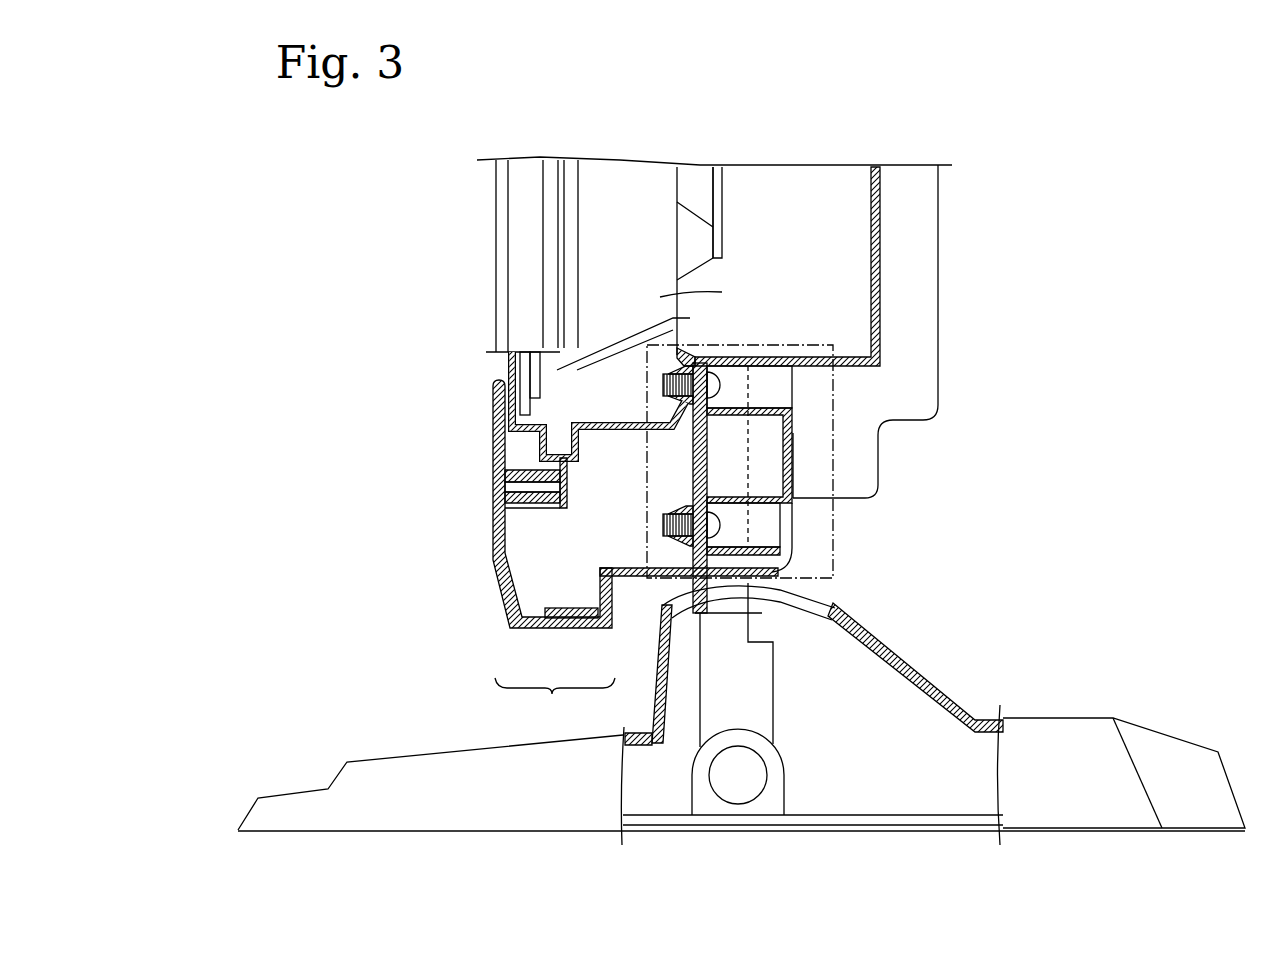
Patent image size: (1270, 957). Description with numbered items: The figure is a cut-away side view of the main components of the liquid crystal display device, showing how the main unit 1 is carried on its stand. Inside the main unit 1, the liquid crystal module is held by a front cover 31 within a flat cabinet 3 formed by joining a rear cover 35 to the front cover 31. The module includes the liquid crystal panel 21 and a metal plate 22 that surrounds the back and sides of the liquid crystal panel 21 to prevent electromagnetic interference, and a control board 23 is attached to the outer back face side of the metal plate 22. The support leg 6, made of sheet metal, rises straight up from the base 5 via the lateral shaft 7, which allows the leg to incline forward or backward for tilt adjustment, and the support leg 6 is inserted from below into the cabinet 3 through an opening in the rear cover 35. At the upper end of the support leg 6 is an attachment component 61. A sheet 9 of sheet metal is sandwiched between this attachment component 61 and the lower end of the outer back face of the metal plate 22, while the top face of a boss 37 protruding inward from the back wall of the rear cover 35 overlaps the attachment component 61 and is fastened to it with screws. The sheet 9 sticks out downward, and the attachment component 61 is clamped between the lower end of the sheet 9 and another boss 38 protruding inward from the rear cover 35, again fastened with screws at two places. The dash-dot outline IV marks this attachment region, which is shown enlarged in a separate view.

The main unit 1 is at (968, 212).
The liquid crystal panel 21 is at (508, 230).
The metal plate 22 is at (690, 335).
The control board 23 is at (718, 196).
The detail region IV is at (800, 345).
The sheet 9 is at (693, 467).
The boss 37 is at (771, 350).
The boss 38 is at (728, 497).
The attachment component 61 is at (708, 437).
The front cover 31 is at (522, 632).
The rear cover 35 is at (590, 632).
The cabinet 3 is at (541, 730).
The support leg 6 is at (773, 677).
The lateral shaft 7 is at (738, 800).
The base 5 is at (1053, 718).